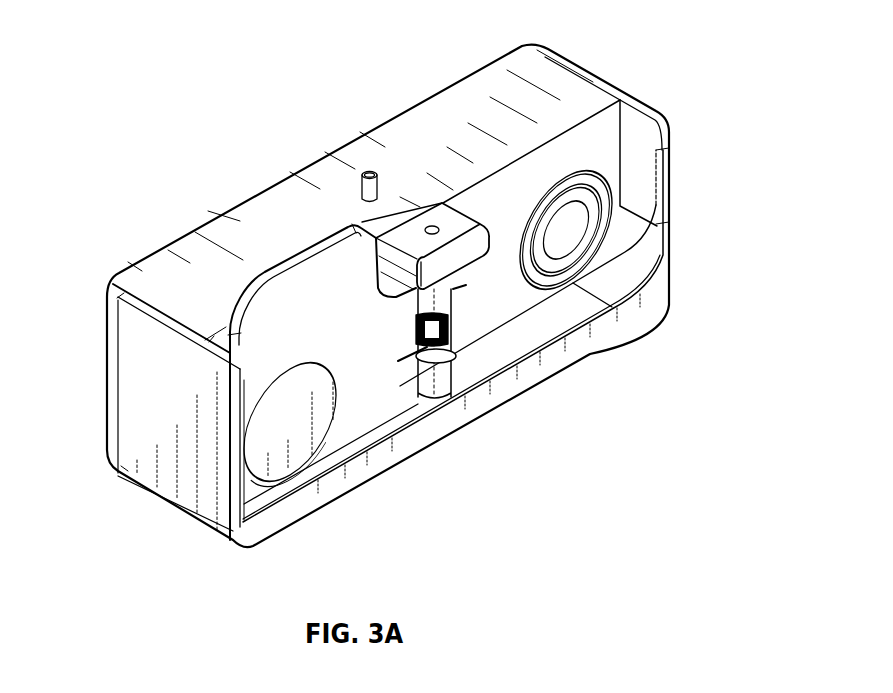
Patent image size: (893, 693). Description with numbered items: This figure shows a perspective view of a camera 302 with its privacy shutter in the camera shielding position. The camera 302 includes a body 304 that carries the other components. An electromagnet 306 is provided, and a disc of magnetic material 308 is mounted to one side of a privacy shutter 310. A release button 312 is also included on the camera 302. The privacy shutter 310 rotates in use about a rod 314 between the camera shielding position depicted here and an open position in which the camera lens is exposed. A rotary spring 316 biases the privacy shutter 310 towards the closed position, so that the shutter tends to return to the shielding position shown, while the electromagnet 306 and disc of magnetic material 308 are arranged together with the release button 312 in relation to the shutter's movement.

The camera housing assembly 302 is at (145, 193).
The housing back panel 304 is at (468, 90).
The lens port 306 is at (578, 170).
The circular opening 308 is at (315, 392).
The mounting bracket wall 310 is at (295, 256).
The locating pin 312 is at (366, 168).
The mounting tab hole 314 is at (430, 226).
The retaining clip post 316 is at (447, 322).